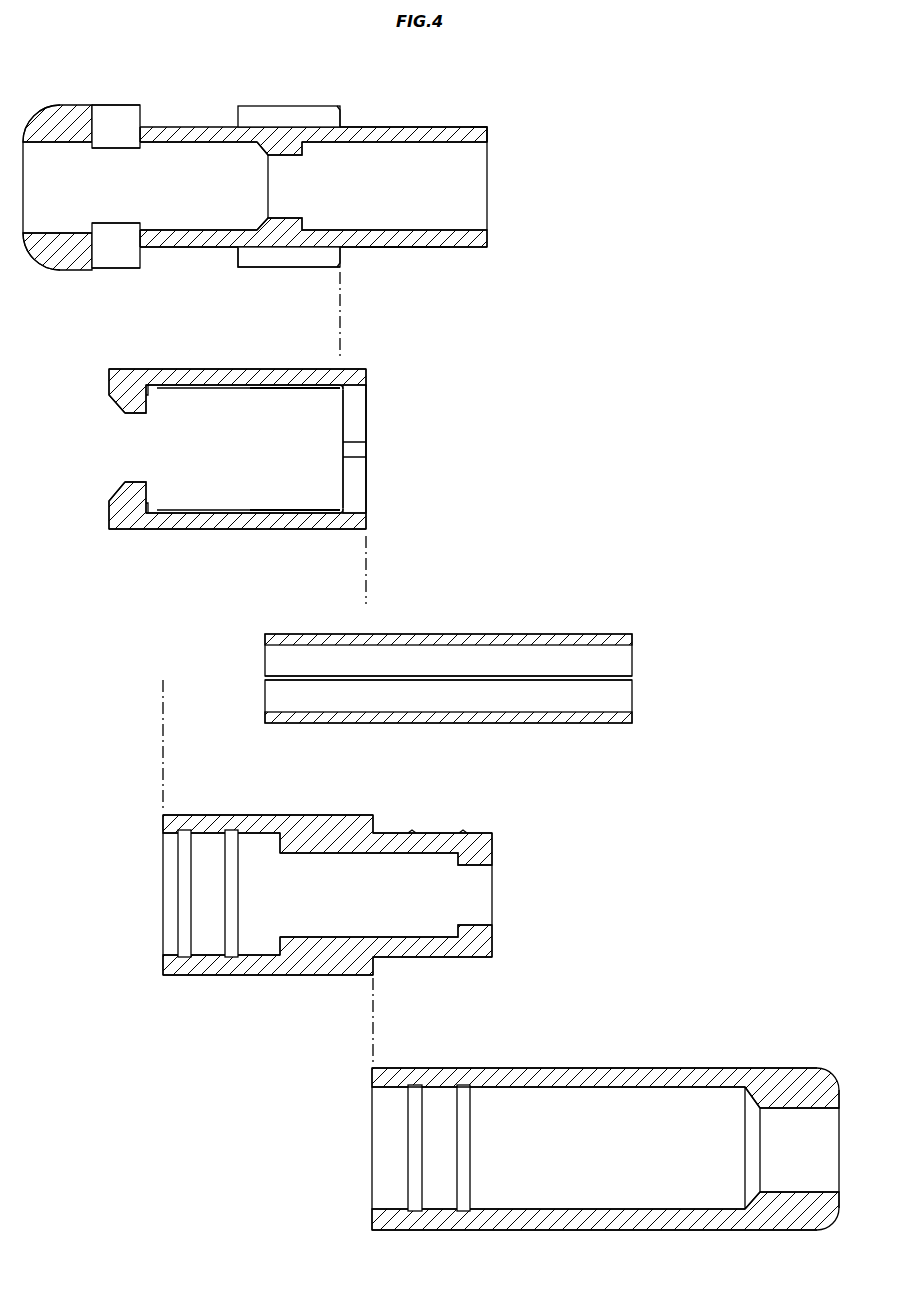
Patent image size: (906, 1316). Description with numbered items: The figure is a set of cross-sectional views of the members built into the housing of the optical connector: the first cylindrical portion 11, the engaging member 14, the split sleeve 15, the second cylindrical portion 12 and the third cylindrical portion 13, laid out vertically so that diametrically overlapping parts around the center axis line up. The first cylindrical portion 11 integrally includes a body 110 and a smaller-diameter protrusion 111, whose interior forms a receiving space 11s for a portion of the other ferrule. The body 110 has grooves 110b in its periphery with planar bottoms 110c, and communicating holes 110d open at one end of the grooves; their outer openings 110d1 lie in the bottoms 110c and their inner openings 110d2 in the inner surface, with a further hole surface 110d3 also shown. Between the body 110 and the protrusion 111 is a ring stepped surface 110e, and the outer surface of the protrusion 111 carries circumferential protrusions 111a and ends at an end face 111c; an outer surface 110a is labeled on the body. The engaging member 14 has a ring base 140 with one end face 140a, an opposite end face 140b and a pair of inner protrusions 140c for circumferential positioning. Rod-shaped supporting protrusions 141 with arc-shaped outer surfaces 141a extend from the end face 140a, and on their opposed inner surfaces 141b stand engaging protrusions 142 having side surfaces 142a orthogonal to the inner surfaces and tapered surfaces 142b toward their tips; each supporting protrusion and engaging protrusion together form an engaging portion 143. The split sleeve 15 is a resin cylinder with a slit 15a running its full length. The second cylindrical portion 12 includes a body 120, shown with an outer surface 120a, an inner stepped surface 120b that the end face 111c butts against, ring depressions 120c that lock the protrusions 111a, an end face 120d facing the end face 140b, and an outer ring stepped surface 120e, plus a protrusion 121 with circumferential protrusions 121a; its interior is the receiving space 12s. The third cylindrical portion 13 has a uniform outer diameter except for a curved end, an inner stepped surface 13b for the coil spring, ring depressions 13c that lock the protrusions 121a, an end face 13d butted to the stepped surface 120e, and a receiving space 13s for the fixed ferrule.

The first cylindrical portion 11 is at (484, 59).
The body 110 is at (265, 116).
The outer peripheral surface 110a is at (65, 102).
The grooves 110b is at (275, 265).
The bottoms of the grooves 110c is at (212, 248).
The communicating holes 110d is at (107, 107).
The outer openings 110d1 is at (117, 101).
The inner openings 110d2 is at (128, 217).
The seal ring side face 110d3 is at (125, 153).
The ring stepped surface 110e is at (342, 113).
The protrusion 111 is at (407, 132).
The protrusions 111a is at (430, 247).
The end face 111c is at (488, 133).
The receiving space 11s is at (474, 191).
The engaging member 14 is at (382, 357).
The base 140 is at (357, 420).
The end face 140a is at (343, 458).
The end face 140b is at (367, 475).
The protrusions 140c is at (363, 450).
The supporting protrusions 141 is at (230, 370).
The outer surfaces 141a is at (167, 368).
The inner surfaces 141b is at (218, 388).
The engaging protrusions 142 is at (145, 480).
The side surfaces 142a is at (148, 400).
The tapered surfaces 142b is at (118, 480).
The engaging portions 143 is at (274, 357).
The split sleeve 15 is at (624, 605).
The slit 15a is at (644, 667).
The second cylindrical portion 12 is at (510, 780).
The body 120 is at (343, 780).
The socket outer surface 120a is at (242, 813).
The stepped surface 120b is at (282, 845).
The ring depressions 120c is at (232, 898).
The end face 120d is at (170, 965).
The ring stepped surface 120e is at (373, 833).
The protrusion 121 is at (427, 950).
The protrusions 121a is at (463, 833).
The receiving space 12s is at (491, 895).
The third cylindrical portion 13 is at (787, 1045).
The stepped surface 13b is at (757, 1203).
The ring depressions 13c is at (463, 1153).
The end face 13d is at (372, 1213).
The receiving space 13s is at (824, 1137).